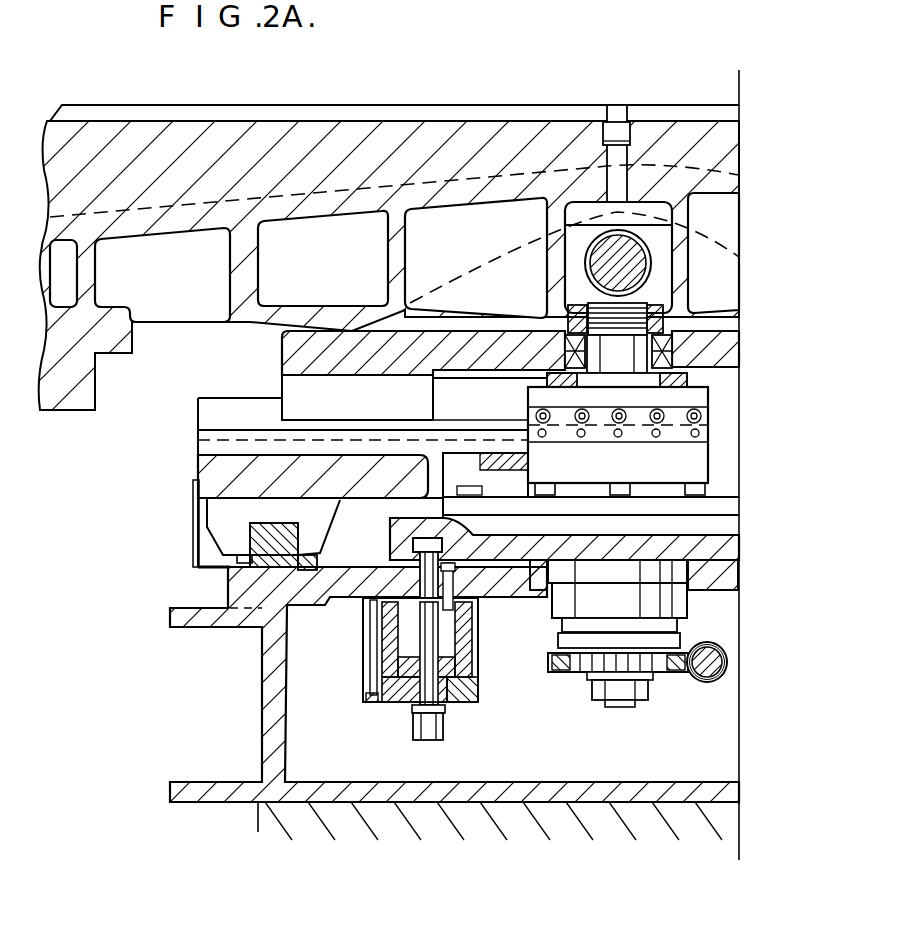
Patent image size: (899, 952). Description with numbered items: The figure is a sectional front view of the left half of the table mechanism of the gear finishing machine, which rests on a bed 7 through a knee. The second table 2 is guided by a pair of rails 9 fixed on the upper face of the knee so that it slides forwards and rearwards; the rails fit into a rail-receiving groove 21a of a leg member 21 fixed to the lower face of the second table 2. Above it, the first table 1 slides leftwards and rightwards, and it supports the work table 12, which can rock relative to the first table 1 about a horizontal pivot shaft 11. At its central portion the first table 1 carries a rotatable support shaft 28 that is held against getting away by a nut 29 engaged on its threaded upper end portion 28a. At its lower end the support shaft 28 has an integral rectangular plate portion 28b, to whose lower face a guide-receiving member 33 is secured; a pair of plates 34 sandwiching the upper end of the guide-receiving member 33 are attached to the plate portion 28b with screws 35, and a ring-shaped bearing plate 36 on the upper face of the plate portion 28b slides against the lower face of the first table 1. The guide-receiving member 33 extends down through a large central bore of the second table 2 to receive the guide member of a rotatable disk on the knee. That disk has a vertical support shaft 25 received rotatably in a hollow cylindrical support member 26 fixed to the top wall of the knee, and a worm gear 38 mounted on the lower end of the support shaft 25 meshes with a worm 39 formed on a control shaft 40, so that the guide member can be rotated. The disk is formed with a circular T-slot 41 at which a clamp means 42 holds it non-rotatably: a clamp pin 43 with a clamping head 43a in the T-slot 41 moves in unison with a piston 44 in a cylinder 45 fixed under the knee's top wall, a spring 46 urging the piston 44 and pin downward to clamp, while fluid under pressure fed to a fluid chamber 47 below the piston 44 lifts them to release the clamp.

The first table 1 is at (298, 352).
The second table 2 is at (218, 473).
The bed 7 is at (577, 813).
The rails 9 is at (247, 567).
The horizontal pivot shaft 11 is at (598, 261).
The work table 12 is at (470, 150).
The leg member 21 is at (228, 512).
The rail-receiving groove 21a is at (292, 537).
The vertical support shaft 25 is at (620, 707).
The hollow cylindrical support member 26 is at (577, 602).
The support shaft 28 is at (628, 352).
The threaded upper end portion 28a is at (672, 198).
The rectangular plate portion 28b is at (466, 411).
The nut 29 is at (568, 306).
The guide-receiving member 33 is at (543, 460).
The plates 34 is at (650, 437).
The screws 35 is at (647, 417).
The ring-shaped bearing plate 36 is at (556, 373).
The worm gear 38 is at (550, 660).
The worm 39 is at (704, 682).
The control shaft 40 is at (704, 642).
The circular T-slot 41 is at (472, 539).
The clamp means 42 is at (358, 674).
The clamp pin 43 is at (428, 620).
The clamping head 43a is at (410, 546).
The piston 44 is at (478, 679).
The cylinder 45 is at (473, 643).
The spring 46 is at (372, 632).
The fluid chamber 47 is at (397, 700).